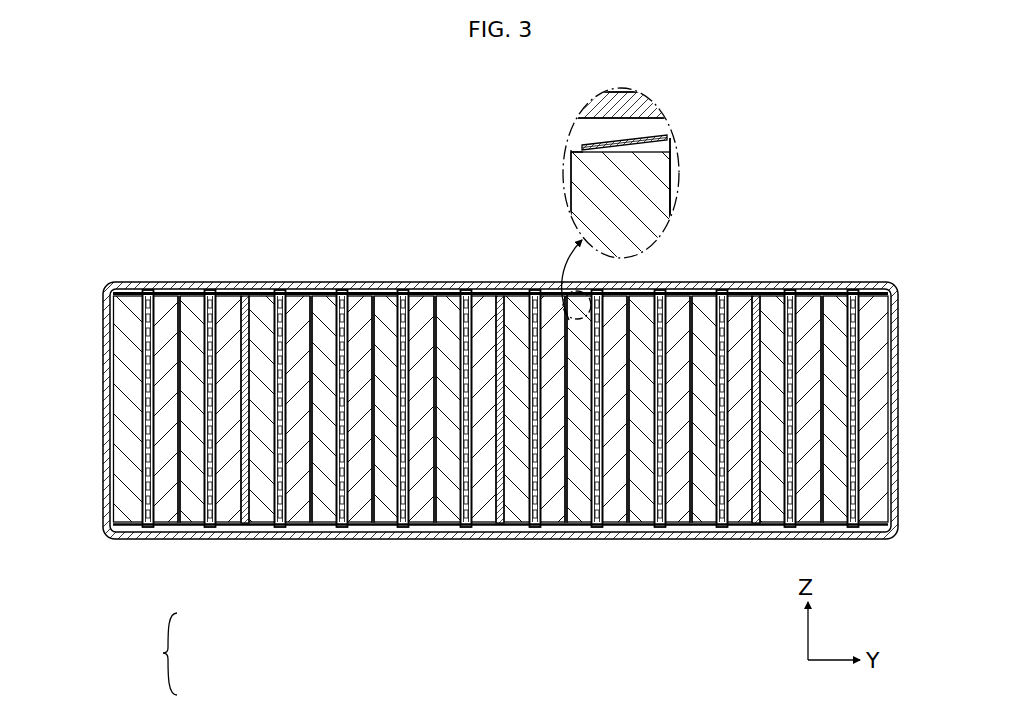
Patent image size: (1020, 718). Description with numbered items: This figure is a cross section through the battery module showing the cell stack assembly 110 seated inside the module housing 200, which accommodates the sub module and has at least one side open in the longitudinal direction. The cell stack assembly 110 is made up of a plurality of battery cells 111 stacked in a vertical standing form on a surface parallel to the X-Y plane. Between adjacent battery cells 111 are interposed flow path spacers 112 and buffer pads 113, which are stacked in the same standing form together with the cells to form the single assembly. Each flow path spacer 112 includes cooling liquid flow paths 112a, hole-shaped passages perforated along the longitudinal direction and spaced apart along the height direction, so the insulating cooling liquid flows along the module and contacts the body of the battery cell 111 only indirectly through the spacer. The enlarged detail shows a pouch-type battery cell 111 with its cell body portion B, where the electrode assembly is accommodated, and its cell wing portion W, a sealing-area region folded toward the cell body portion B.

The cell stack assembly 110 is at (167, 654).
The battery cell 111 is at (165, 518).
The flow path spacer 112 is at (208, 284).
The cooling liquid flow path 112a is at (345, 298).
The buffer pad 113 is at (247, 523).
The module housing 200 is at (758, 283).
The cell wing portion W is at (584, 146).
The cell body portion B is at (644, 190).